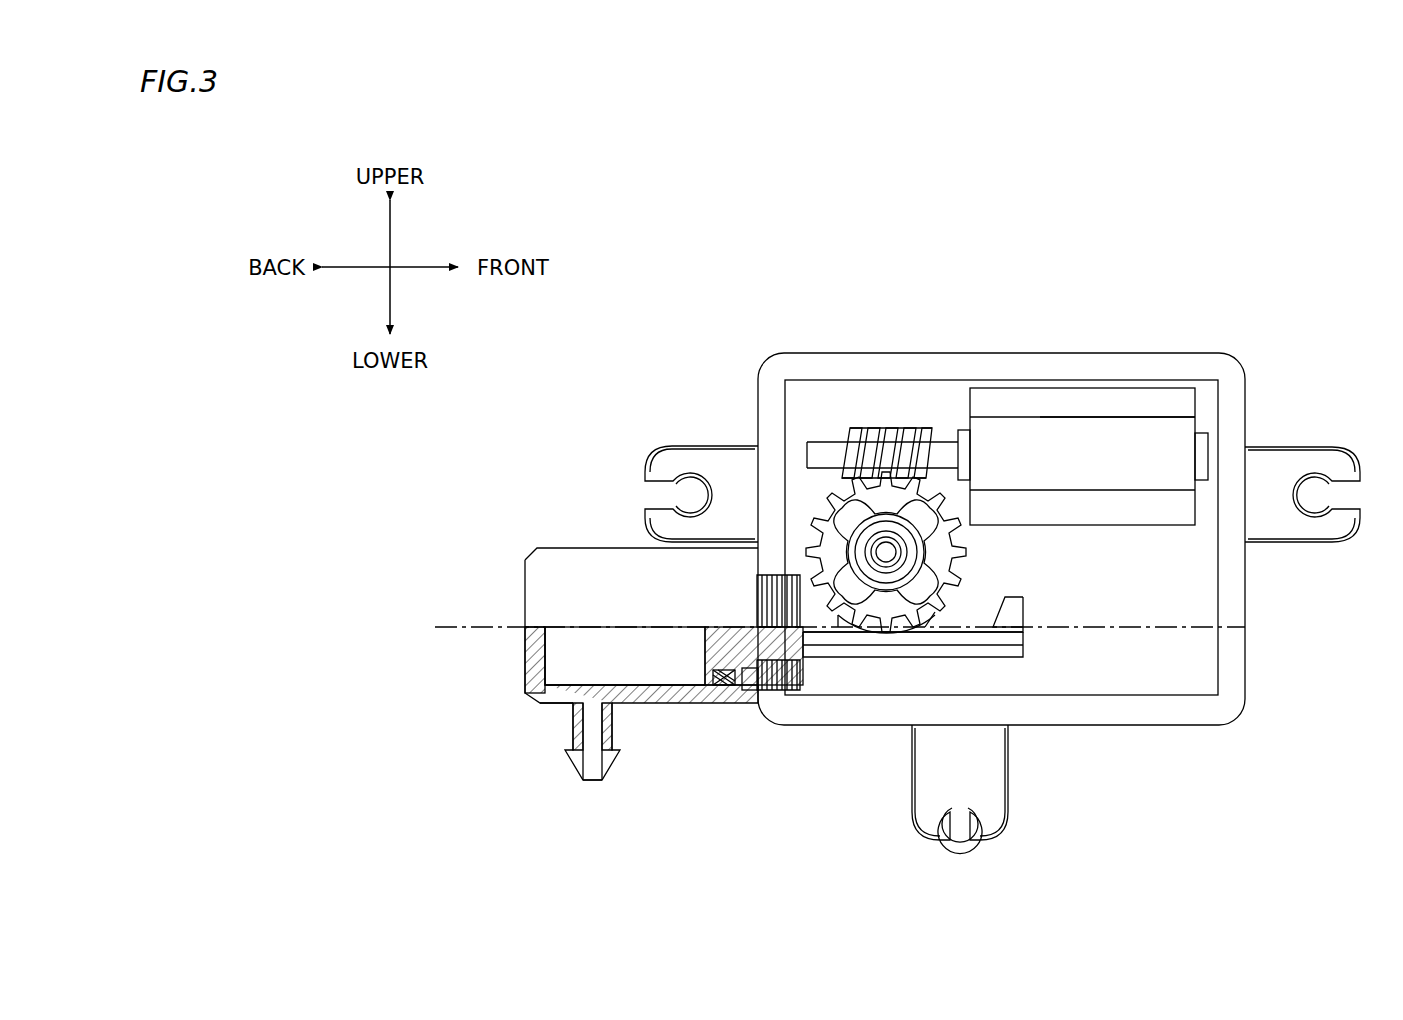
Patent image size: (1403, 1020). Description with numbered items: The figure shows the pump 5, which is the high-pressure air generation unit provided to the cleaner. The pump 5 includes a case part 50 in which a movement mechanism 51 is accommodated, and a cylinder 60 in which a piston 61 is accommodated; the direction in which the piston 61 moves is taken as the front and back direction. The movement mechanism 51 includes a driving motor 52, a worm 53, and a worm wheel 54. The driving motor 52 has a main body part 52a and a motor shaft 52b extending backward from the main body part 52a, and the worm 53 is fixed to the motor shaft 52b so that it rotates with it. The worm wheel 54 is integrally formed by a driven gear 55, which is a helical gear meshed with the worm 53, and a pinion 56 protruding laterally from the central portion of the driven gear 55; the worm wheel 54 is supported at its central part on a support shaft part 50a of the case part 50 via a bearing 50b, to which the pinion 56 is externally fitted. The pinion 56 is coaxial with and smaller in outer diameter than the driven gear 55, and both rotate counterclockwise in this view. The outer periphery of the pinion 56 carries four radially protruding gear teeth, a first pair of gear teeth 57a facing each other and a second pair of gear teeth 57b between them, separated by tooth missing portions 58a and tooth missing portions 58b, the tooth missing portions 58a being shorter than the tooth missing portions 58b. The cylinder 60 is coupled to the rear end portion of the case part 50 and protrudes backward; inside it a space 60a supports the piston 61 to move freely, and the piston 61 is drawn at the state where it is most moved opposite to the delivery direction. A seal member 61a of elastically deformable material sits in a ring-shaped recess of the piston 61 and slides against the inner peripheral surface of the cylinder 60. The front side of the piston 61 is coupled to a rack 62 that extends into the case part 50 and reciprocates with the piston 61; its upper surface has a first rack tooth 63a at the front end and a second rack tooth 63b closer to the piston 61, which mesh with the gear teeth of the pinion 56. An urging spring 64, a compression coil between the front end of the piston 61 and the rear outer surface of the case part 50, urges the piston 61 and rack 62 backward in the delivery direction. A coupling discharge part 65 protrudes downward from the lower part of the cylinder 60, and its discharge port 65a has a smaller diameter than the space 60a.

The pump 5 is at (728, 238).
The case part 50 is at (1090, 352).
The support shaft part 50a is at (886, 556).
The bearing 50b is at (878, 578).
The movement mechanism 51 is at (895, 410).
The driving motor 52 is at (1012, 395).
The main body part 52a is at (1050, 415).
The motor shaft 52b is at (950, 450).
The worm 53 is at (868, 440).
The worm wheel 54 is at (968, 540).
The driven gear 55 is at (962, 560).
The pinion 56 is at (958, 586).
The gear teeth 57a is at (800, 505).
The gear teeth 57b is at (805, 560).
The tooth missing portions 58a is at (835, 538).
The tooth missing portions 58b is at (815, 520).
The cylinder 60 is at (545, 548).
The space 60a is at (577, 650).
The piston 61 is at (710, 655).
The seal member 61a is at (744, 690).
The rack 62 is at (1000, 725).
The first rack tooth 63a is at (1012, 603).
The second rack tooth 63b is at (982, 655).
The urging spring 64 is at (777, 632).
The coupling discharge part 65 is at (574, 735).
The discharge port 65a is at (594, 768).